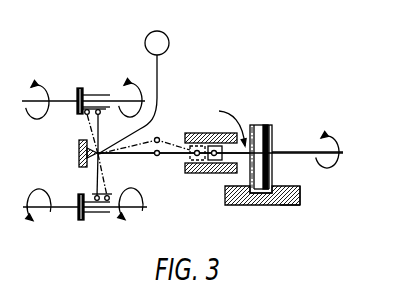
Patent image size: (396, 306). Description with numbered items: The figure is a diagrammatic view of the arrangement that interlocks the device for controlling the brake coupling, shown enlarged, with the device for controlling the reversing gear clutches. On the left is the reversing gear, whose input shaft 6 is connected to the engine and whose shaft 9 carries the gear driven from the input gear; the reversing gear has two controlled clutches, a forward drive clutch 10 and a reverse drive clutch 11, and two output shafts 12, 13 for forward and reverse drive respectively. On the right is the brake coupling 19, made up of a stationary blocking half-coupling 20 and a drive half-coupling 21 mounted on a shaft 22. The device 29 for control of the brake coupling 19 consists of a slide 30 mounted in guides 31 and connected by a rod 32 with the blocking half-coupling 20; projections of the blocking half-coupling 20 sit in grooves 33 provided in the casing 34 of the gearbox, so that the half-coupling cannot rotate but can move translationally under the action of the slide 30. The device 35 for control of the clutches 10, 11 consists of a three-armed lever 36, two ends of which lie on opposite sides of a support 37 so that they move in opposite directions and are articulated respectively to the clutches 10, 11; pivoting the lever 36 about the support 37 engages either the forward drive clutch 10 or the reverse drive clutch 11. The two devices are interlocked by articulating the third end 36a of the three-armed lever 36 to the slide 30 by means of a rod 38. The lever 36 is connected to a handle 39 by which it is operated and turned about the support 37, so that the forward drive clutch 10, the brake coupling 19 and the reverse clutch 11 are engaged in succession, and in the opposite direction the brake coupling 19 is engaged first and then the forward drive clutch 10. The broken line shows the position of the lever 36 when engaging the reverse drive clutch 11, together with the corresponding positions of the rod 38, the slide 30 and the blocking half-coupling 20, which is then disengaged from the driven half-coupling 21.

The input shaft 6 is at (70, 210).
The shaft 9 is at (45, 84).
The forward drive clutch 10 is at (82, 222).
The reverse drive clutch 11 is at (80, 87).
The output shaft 12 is at (120, 214).
The output shaft 13 is at (118, 92).
The brake coupling 19 is at (267, 125).
The blocking half-coupling 20 is at (253, 125).
The drive half-coupling 21 is at (274, 130).
The shaft 22 is at (288, 152).
The device for control of the brake coupling 29 is at (228, 118).
The slide 30 is at (215, 160).
The guides 31 is at (197, 160).
The rod 32 is at (246, 160).
The grooves 33 is at (266, 197).
The casing 34 is at (297, 193).
The device for control of the clutches 35 is at (91, 187).
The three-armed lever 36 is at (97, 174).
The third end 36a is at (112, 158).
The support 37 is at (79, 152).
The rod 38 is at (168, 156).
The handle 39 is at (169, 43).